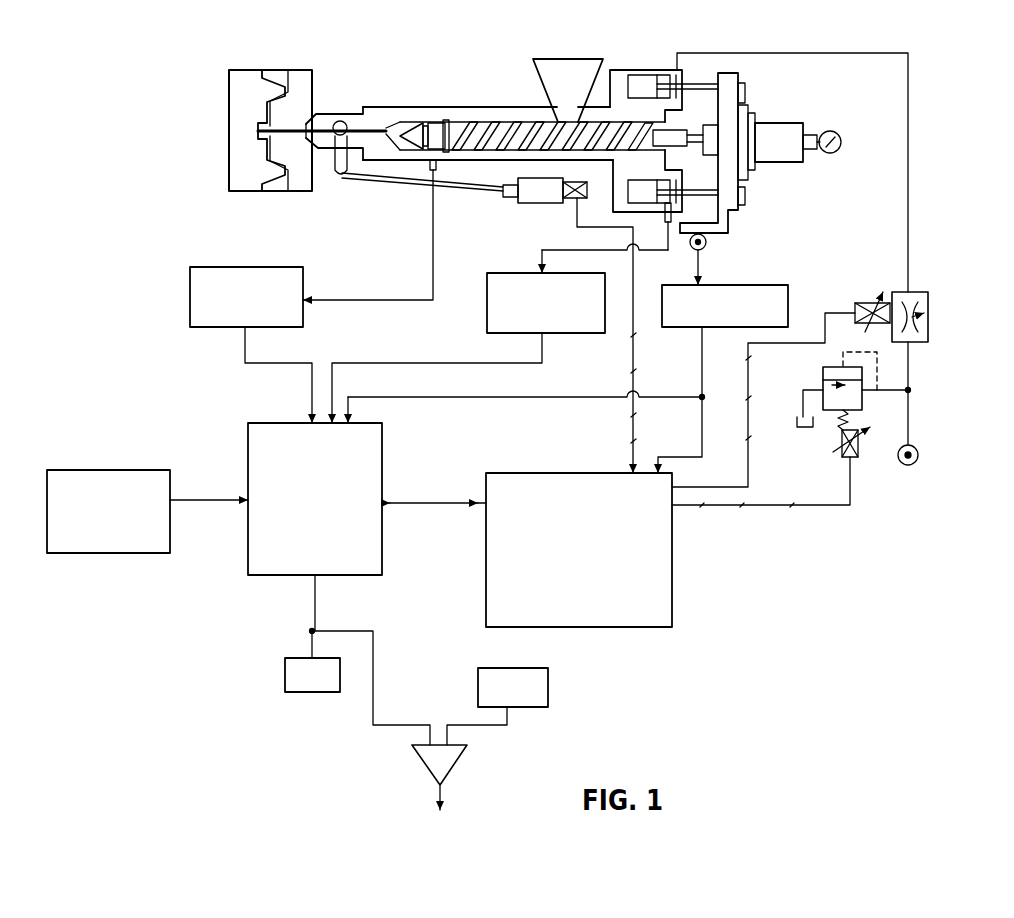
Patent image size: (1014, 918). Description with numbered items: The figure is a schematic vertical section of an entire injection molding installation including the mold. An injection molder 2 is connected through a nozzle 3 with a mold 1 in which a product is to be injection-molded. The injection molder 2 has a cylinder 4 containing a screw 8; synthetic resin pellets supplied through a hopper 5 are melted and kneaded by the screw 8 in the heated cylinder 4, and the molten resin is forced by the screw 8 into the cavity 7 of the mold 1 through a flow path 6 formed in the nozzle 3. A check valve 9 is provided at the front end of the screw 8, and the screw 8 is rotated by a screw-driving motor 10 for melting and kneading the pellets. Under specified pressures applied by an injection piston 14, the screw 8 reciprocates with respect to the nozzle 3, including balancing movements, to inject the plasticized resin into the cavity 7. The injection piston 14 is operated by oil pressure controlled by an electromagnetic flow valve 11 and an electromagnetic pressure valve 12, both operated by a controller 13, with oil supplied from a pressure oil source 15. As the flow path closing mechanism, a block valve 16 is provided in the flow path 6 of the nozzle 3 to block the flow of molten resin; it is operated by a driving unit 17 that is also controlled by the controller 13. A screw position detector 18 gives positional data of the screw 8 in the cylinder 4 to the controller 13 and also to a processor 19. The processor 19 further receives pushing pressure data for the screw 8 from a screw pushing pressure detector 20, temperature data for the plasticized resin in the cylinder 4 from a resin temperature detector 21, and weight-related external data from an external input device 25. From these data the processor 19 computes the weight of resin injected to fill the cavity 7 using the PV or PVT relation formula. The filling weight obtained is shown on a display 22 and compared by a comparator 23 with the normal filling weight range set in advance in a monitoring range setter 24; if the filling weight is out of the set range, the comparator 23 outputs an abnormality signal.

The mold 1 is at (238, 92).
The injection molder 2 is at (456, 104).
The nozzle 3 is at (330, 113).
The cylinder 4 is at (388, 105).
The hopper 5 is at (568, 66).
The flow path 6 is at (353, 121).
The cavity 7 is at (278, 76).
The screw 8 is at (492, 118).
The check valve 9 is at (433, 119).
The screw-driving motor 10 is at (788, 152).
The electromagnetic flow valve 11 is at (928, 333).
The electromagnetic pressure valve 12 is at (855, 455).
The controller 13 is at (673, 604).
The injection piston 14 is at (633, 65).
The pressure oil source 15 is at (920, 455).
The block valve 16 is at (333, 160).
The driving unit 17 is at (535, 197).
The screw position detector 18 is at (773, 289).
The processor 19 is at (380, 583).
The screw pushing pressure detector 20 is at (487, 325).
The resin temperature detector 21 is at (190, 318).
The display 22 is at (285, 676).
The comparator 23 is at (453, 757).
The monitoring range setter 24 is at (548, 680).
The external input device 25 is at (165, 555).